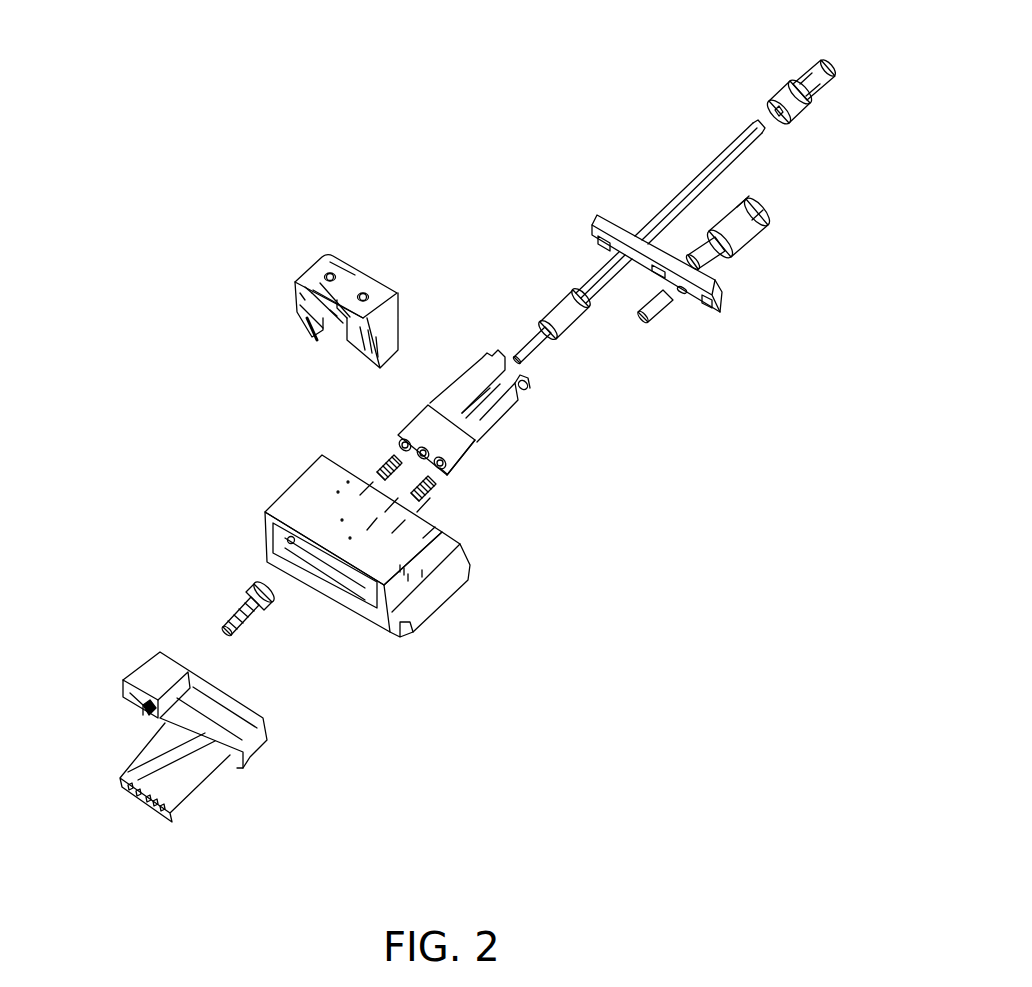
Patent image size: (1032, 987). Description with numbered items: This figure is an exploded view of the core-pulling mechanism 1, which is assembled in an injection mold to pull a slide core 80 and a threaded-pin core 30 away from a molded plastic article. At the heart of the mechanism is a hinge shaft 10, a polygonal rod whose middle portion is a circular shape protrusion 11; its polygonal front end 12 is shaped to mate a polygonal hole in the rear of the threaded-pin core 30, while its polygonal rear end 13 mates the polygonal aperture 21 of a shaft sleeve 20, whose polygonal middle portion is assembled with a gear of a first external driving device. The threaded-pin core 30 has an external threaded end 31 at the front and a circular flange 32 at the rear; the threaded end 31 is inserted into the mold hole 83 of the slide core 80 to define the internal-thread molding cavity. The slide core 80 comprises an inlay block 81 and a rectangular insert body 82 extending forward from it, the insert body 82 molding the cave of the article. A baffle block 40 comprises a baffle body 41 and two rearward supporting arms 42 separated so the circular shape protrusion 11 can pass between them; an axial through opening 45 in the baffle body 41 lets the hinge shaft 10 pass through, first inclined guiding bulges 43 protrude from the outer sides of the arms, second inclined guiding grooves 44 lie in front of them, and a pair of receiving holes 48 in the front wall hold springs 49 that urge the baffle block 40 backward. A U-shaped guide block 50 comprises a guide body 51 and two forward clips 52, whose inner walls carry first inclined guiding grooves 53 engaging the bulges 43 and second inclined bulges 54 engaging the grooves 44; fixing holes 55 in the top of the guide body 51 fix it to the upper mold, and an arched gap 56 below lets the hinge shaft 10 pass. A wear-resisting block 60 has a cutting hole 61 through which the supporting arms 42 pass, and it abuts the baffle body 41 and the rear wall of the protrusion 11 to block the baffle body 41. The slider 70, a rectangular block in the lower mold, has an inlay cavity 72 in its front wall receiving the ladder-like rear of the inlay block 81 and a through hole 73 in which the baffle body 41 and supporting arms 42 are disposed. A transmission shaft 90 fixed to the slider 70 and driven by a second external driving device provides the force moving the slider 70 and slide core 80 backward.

The core-pulling mechanism 1 is at (873, 117).
The hinge shaft 10 is at (598, 175).
The circular shape protrusion 11 is at (568, 303).
The front end 12 is at (530, 333).
The rear end 13 is at (673, 210).
The shaft sleeve 20 is at (800, 80).
The polygonal aperture 21 is at (760, 118).
The threaded-pin core 30 is at (210, 530).
The external threaded end 31 is at (230, 618).
The circular flange 32 is at (260, 588).
The baffle block 40 is at (640, 412).
The baffle body 41 is at (470, 440).
The supporting arms 42 is at (490, 410).
The first inclined guiding bulges 43 is at (527, 385).
The second inclined guiding grooves 44 is at (513, 400).
The axial through opening 45 is at (443, 477).
The receiving holes 48 is at (447, 470).
The springs 49 is at (425, 493).
The guide block 50 is at (397, 193).
The guide body 51 is at (352, 277).
The clips 52 is at (303, 290).
The first inclined guiding grooves 53 is at (310, 280).
The second inclined bulges 54 is at (310, 317).
The fixing holes 55 is at (330, 277).
The arched gap 56 is at (337, 313).
The wear-resisting block 60 is at (703, 290).
The cutting hole 61 is at (640, 262).
The slider 70 is at (412, 705).
The inlay cavity 72 is at (355, 593).
The through hole 73 is at (308, 548).
The slide core 80 is at (47, 677).
The inlay block 81 is at (150, 665).
The insert body 82 is at (143, 767).
The mold hole 83 is at (143, 705).
The transmission shaft 90 is at (760, 218).